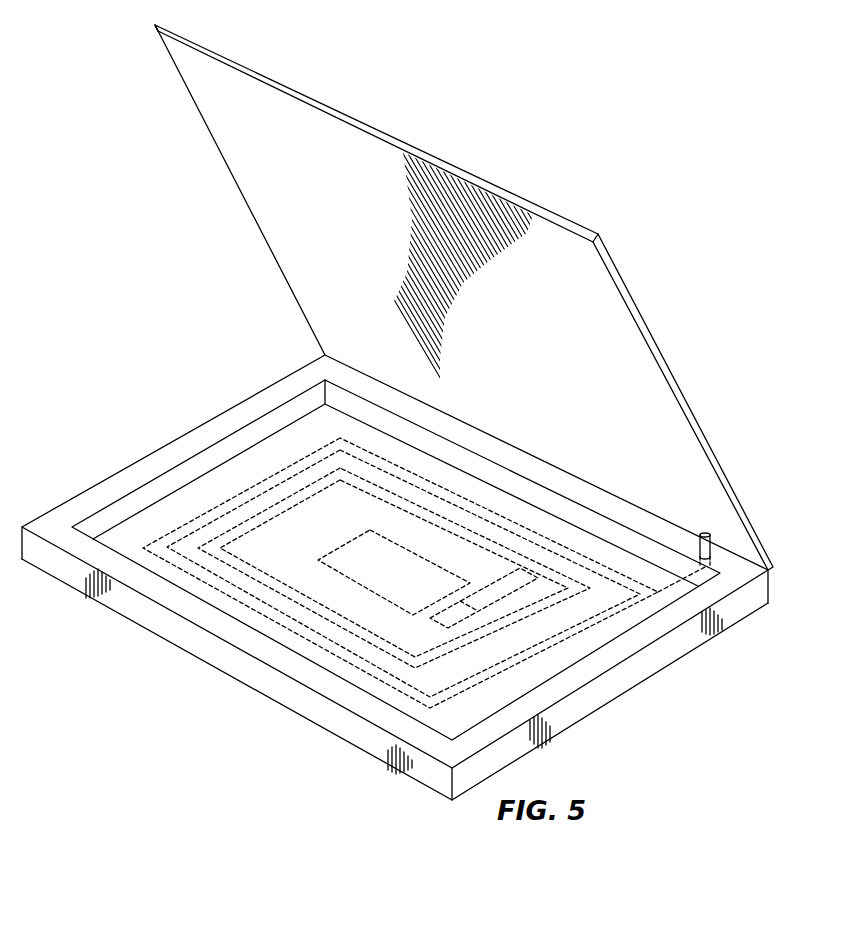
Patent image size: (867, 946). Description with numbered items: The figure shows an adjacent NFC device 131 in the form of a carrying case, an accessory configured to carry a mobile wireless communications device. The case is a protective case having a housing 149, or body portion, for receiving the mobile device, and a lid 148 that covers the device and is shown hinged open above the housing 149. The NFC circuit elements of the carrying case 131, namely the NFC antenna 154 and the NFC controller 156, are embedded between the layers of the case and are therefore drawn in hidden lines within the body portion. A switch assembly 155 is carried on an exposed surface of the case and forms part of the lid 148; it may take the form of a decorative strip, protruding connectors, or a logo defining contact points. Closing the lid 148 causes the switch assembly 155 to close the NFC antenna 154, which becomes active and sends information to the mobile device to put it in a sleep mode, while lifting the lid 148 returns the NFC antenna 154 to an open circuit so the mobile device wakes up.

The lid 148 is at (240, 198).
The adjacent NFC device 131 is at (240, 401).
The housing 149 is at (645, 684).
The NFC antenna 154 is at (230, 498).
The switch assembly 155 is at (713, 538).
The NFC controller 156 is at (330, 557).